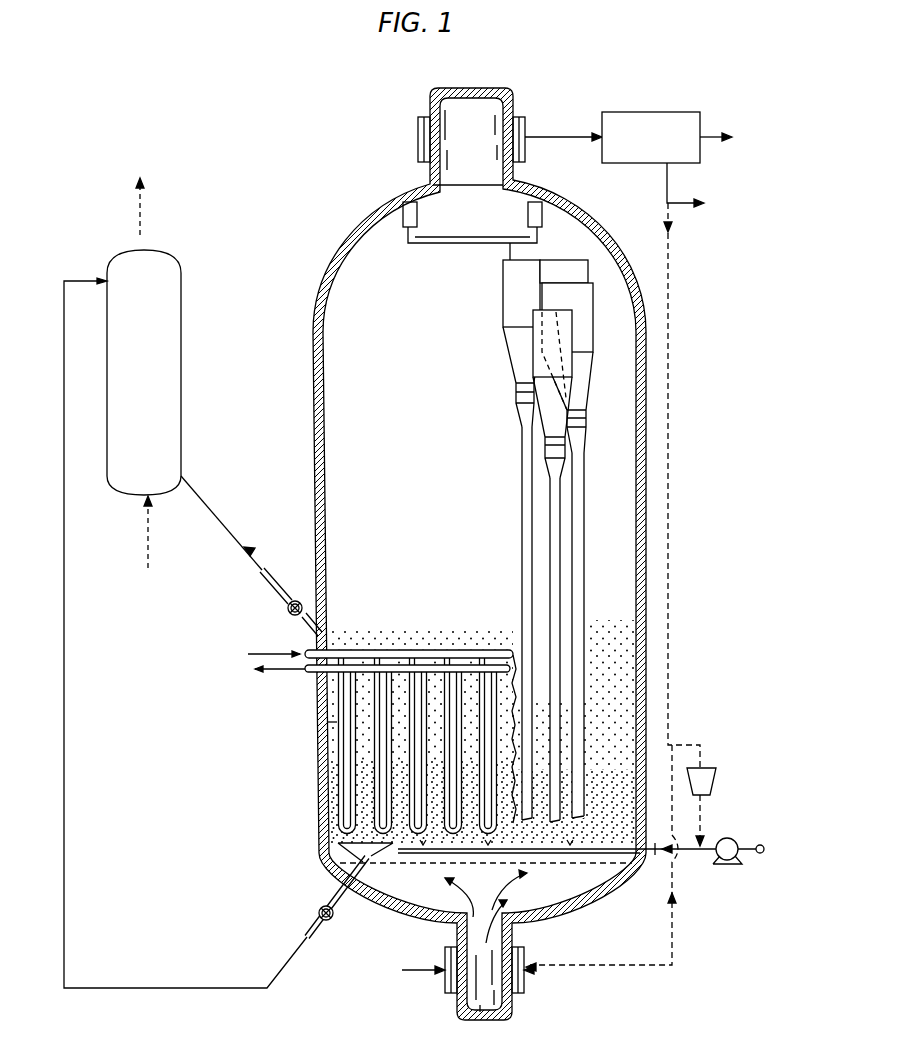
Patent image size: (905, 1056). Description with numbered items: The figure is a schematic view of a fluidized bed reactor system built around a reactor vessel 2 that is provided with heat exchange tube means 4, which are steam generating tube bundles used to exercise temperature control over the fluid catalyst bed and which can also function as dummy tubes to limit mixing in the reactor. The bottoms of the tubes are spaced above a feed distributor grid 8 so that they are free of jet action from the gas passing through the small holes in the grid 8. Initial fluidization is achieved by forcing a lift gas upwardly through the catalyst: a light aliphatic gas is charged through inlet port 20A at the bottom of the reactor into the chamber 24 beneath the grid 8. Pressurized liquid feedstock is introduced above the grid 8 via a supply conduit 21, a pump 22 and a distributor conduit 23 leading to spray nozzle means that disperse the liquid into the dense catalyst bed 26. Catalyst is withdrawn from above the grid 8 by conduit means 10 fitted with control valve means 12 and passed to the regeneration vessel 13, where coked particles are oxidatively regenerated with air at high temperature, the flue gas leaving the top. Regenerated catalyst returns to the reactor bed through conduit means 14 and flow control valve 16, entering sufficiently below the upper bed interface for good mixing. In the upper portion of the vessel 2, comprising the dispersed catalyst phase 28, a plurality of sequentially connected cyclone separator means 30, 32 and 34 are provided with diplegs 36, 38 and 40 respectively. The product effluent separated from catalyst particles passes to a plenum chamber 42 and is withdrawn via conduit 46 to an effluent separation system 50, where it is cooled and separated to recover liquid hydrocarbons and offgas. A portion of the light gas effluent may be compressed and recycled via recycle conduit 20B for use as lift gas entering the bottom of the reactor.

The reactor vessel 2 is at (311, 471).
The heat exchange tube means 4 is at (311, 723).
The feed distributor grid 8 is at (422, 866).
The conduit means 10 is at (337, 891).
The control valve means 12 is at (318, 913).
The vessel 13 is at (181, 280).
The conduit means 14 is at (288, 607).
The flow control valve 16 is at (296, 620).
The inlet port 20A is at (408, 973).
The recycle conduit 20B is at (569, 973).
The supply conduit 21 is at (745, 848).
The pump 22 is at (727, 865).
The distributor conduit 23 is at (600, 853).
The chamber 24 is at (560, 900).
The dense fluidized bed 26 is at (403, 585).
The dispersed catalyst phase 28 is at (396, 517).
The cyclone separator means 30 is at (560, 399).
The cyclone separator means 32 is at (586, 307).
The cyclone separator means 34 is at (503, 296).
The dipleg 36 is at (550, 545).
The dipleg 38 is at (584, 501).
The dipleg 40 is at (522, 523).
The plenum chamber 42 is at (484, 220).
The conduit 46 is at (547, 137).
The effluent separation system 50 is at (642, 112).